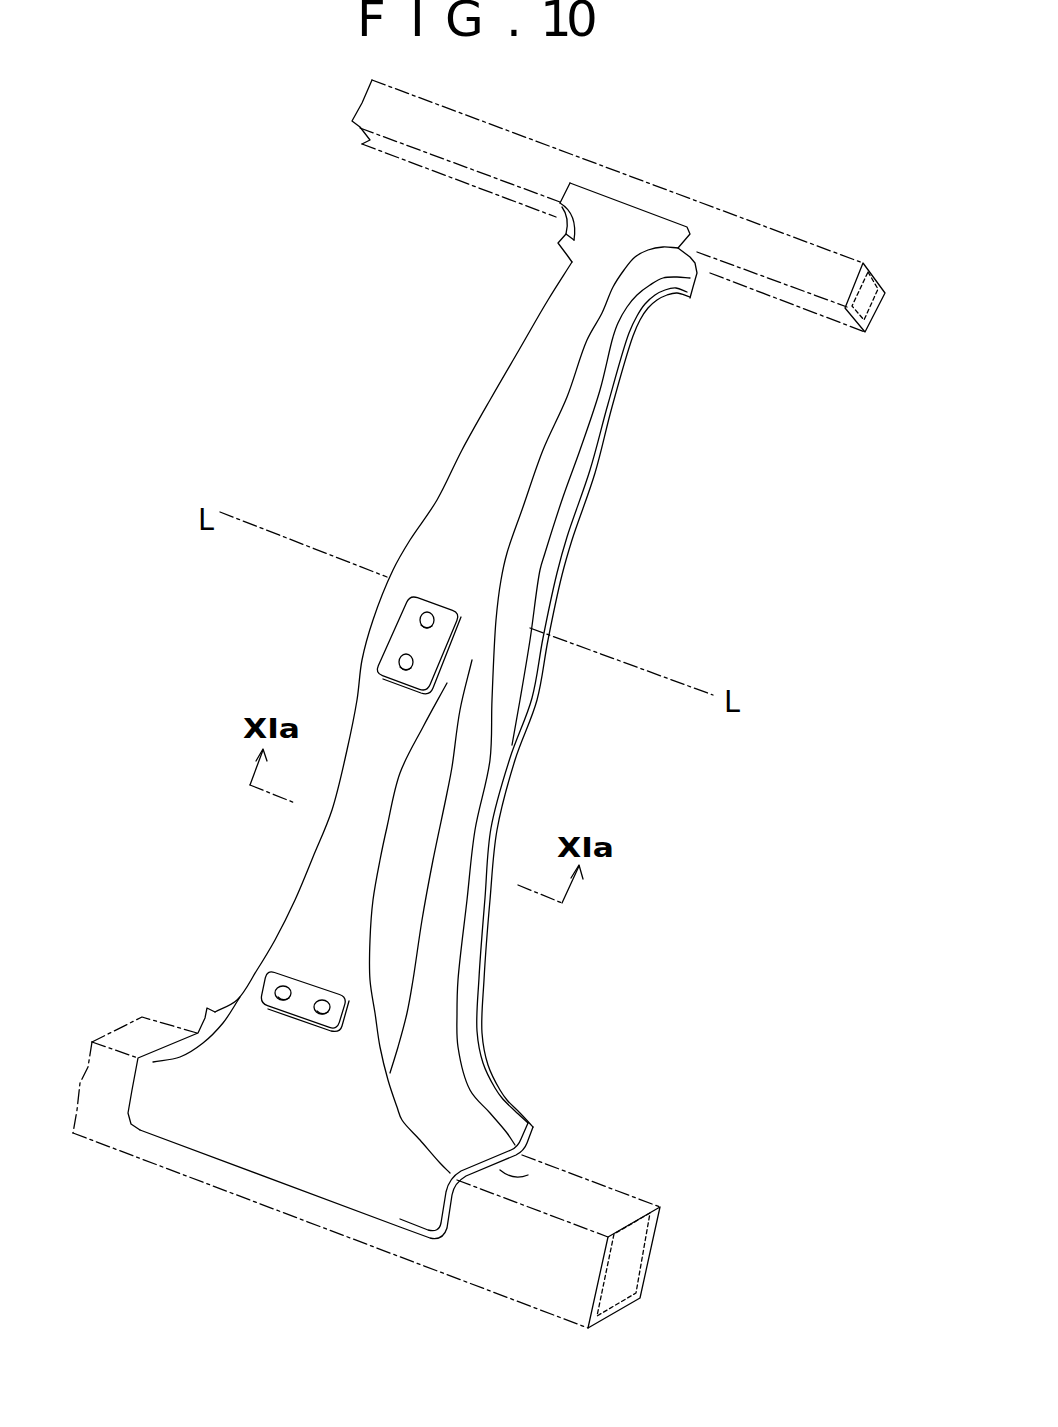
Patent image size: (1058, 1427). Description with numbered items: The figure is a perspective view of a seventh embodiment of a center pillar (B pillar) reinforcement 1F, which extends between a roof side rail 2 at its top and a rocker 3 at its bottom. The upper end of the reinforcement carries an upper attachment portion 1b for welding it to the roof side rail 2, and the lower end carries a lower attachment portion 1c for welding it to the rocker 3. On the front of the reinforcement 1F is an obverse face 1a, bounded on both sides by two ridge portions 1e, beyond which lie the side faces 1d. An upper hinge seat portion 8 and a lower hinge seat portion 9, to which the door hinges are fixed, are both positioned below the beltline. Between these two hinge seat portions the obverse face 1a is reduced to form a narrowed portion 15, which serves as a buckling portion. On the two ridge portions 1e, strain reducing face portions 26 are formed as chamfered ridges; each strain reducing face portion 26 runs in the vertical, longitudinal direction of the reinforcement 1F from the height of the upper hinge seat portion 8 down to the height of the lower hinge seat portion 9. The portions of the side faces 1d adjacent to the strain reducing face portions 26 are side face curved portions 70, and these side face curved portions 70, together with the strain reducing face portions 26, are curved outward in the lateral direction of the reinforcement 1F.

The obverse face 1a is at (517, 370).
The upper attachment portion 1b is at (695, 263).
The lower attachment portion 1c is at (517, 1172).
The side faces 1d is at (565, 223).
The ridge portions 1e is at (457, 458).
The reinforcement 1F is at (607, 422).
The roof side rail 2 is at (813, 247).
The rocker 3 is at (653, 1253).
The upper hinge seat portion 8 is at (402, 627).
The lower hinge seat portion 9 is at (265, 985).
The narrowed portion 15 is at (333, 863).
The strain reducing face portions 26 is at (397, 928).
The side face curved portions 70 is at (477, 742).